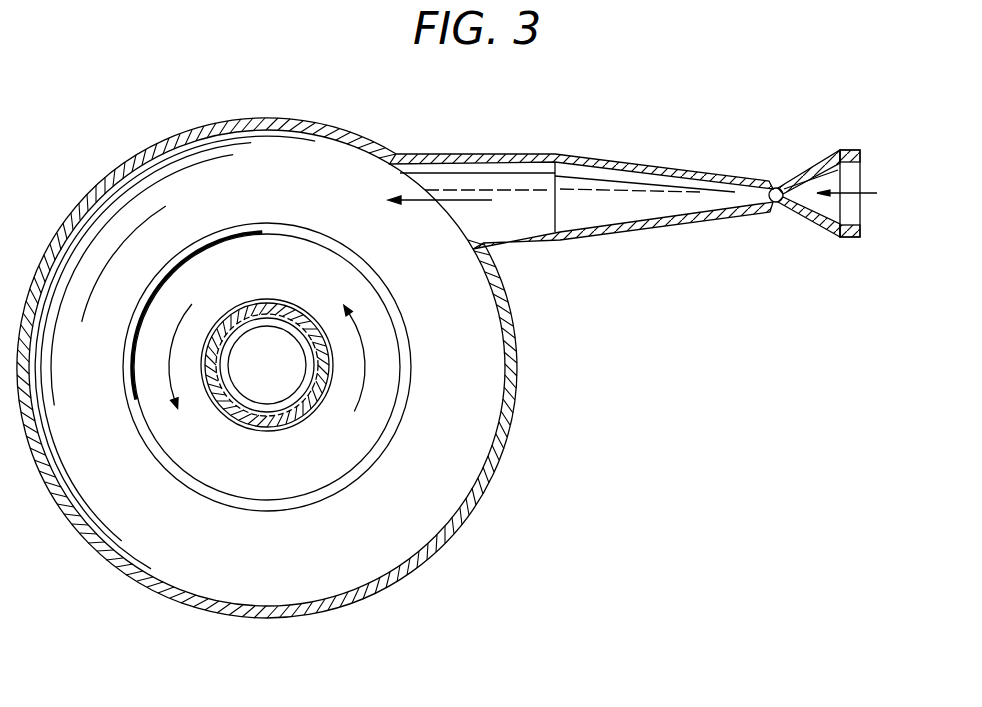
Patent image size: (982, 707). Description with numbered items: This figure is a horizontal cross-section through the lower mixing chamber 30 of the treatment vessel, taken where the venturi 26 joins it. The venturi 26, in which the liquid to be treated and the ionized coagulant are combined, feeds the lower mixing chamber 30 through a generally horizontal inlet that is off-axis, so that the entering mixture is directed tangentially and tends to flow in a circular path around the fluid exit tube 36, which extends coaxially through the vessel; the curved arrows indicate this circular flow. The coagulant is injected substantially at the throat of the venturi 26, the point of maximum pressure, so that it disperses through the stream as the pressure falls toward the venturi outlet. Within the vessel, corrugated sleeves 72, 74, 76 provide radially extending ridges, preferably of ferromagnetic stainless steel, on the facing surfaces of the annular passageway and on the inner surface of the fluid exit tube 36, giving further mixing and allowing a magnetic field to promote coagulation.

The lower mixing chamber 30 is at (303, 118).
The venturi 26 is at (625, 163).
The fluid exit tube 36 is at (243, 420).
The corrugated sleeve 72 is at (283, 302).
The corrugated sleeve 74 is at (347, 470).
The corrugated sleeve 76 is at (306, 362).